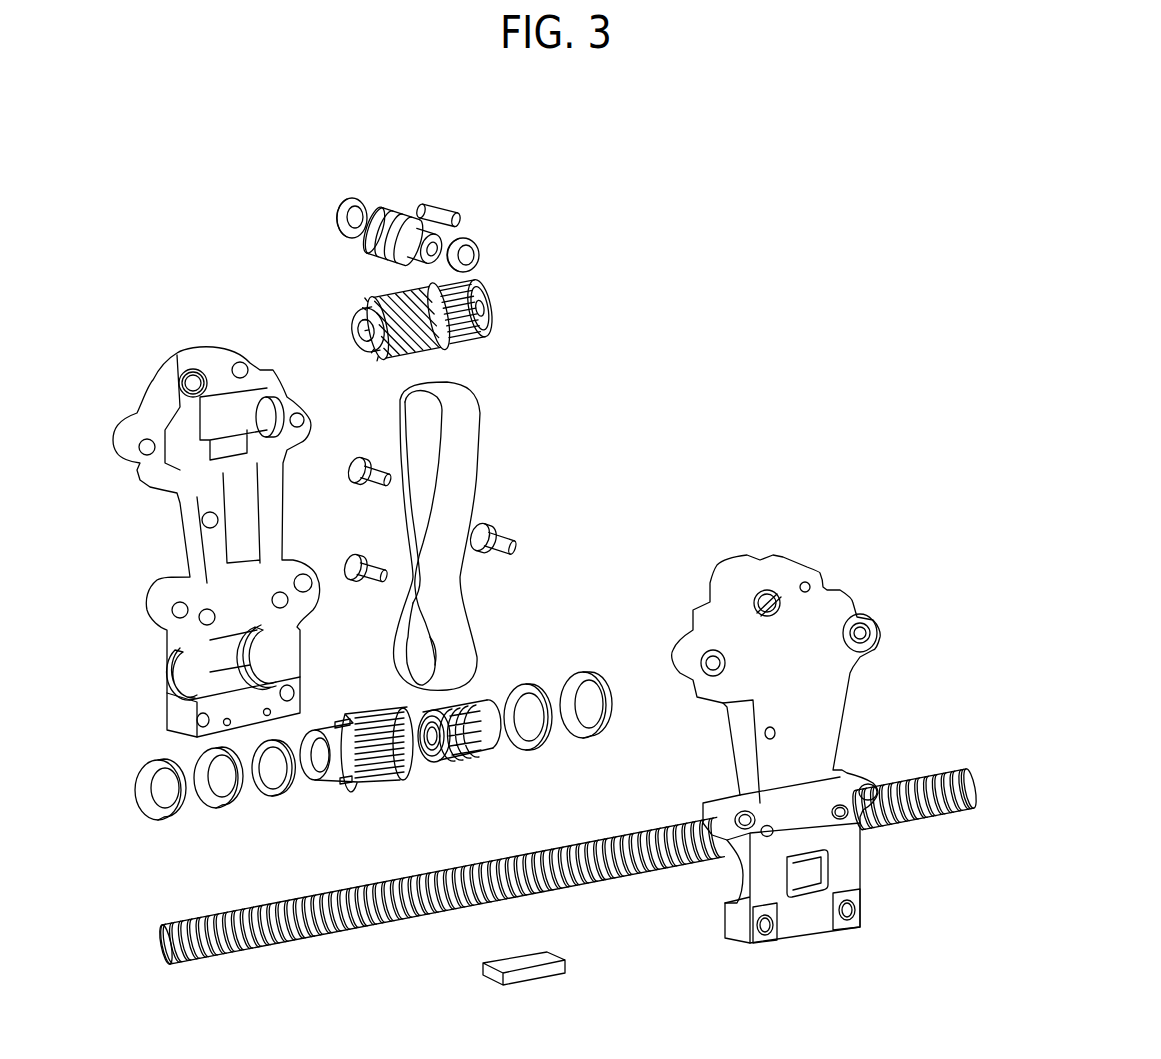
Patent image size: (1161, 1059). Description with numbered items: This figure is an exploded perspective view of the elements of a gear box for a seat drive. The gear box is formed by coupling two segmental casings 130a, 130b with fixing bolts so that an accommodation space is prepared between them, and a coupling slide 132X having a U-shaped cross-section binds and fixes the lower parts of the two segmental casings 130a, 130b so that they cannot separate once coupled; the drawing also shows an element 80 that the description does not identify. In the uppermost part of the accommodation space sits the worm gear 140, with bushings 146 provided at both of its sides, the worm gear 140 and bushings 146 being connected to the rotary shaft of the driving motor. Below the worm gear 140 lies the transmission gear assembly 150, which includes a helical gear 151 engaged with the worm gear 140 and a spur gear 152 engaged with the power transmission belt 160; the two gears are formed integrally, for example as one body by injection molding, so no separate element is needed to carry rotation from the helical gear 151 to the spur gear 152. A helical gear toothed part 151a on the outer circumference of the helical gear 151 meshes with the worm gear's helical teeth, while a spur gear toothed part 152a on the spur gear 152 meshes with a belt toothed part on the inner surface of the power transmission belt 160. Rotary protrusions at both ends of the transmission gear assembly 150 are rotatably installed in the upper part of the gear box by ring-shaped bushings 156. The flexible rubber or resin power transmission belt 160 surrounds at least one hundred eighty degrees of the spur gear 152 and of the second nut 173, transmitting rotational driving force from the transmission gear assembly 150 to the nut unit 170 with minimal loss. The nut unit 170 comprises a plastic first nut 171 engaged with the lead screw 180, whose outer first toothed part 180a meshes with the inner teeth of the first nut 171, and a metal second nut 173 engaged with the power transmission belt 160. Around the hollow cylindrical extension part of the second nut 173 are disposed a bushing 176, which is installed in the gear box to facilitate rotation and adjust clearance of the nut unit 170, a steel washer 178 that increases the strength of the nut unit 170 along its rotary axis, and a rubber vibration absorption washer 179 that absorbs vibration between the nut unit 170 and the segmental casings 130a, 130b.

The pin 80 is at (504, 543).
The segmental casing 130a is at (175, 362).
The segmental casing 130b is at (828, 582).
The coupling slide 132X is at (558, 962).
The worm gear 140 is at (398, 206).
The bushings 146 is at (337, 207).
The transmission gear assembly 150 is at (508, 400).
The helical gear 151 is at (458, 343).
The helical gear toothed part 151a is at (380, 294).
The spur gear 152 is at (492, 317).
The spur gear toothed part 152a is at (482, 288).
The ring-shaped bushings 156 is at (352, 324).
The power transmission belt 160 is at (458, 475).
The nut unit 170 is at (376, 841).
The first nut 171 is at (466, 761).
The second nut 173 is at (381, 784).
The bushing 176 is at (140, 790).
The steel washer 178 is at (212, 806).
The vibration absorption washer 179 is at (268, 794).
The lead screw 180 is at (322, 936).
The first toothed part 180a is at (388, 924).